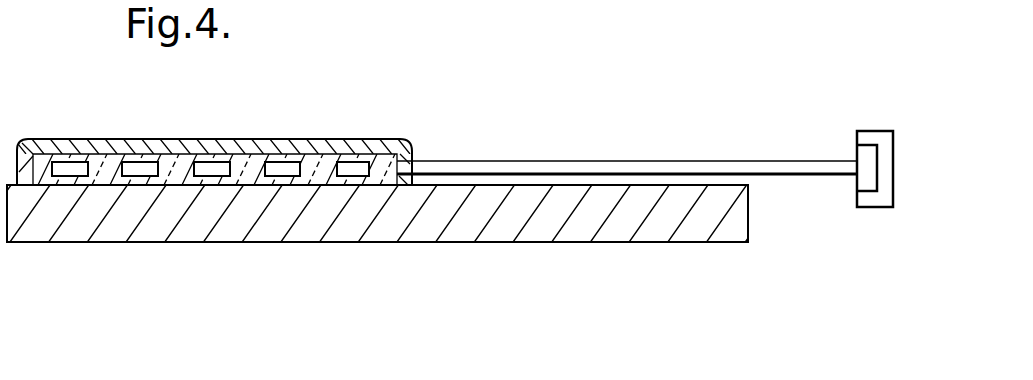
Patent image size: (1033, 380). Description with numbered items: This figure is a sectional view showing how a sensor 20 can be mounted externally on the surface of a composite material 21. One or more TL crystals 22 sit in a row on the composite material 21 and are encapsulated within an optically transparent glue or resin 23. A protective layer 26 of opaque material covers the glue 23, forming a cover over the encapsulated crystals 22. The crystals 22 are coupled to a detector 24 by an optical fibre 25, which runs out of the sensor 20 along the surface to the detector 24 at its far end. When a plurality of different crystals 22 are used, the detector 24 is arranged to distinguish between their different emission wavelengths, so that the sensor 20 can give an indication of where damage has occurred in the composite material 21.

The sensor 20 is at (312, 130).
The composite material 21 is at (470, 228).
The TL crystals 22 is at (282, 170).
The optically transparent glue or resin 23 is at (172, 181).
The detector 24 is at (873, 133).
The optical fibre 25 is at (619, 168).
The protective layer 26 is at (161, 137).